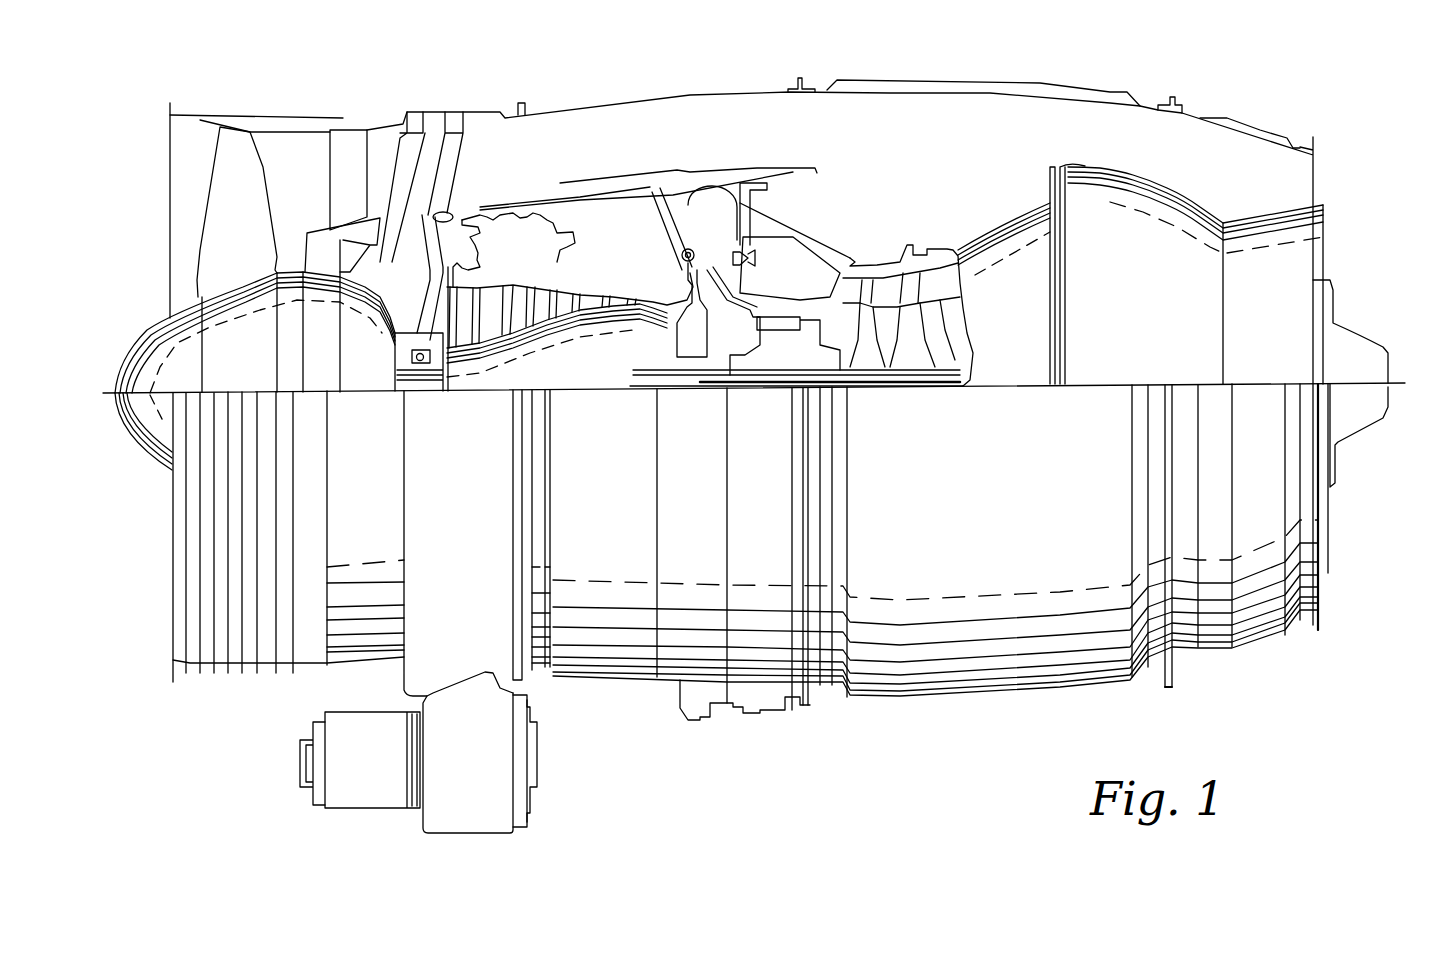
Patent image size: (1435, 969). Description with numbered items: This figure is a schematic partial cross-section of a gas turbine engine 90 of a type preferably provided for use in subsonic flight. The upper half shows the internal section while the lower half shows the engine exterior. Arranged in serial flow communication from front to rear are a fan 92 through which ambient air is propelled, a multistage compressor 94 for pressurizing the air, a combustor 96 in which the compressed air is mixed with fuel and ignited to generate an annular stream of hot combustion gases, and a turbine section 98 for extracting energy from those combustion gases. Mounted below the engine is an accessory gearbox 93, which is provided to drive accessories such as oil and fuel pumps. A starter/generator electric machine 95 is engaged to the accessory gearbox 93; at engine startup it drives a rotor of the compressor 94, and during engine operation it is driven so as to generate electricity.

The gas turbine engine 90 is at (228, 738).
The fan 92 is at (195, 145).
The accessory gearbox 93 is at (493, 783).
The multistage compressor 94 is at (558, 272).
The starter/generator electric machine 95 is at (373, 800).
The combustor 96 is at (815, 242).
The turbine section 98 is at (923, 232).